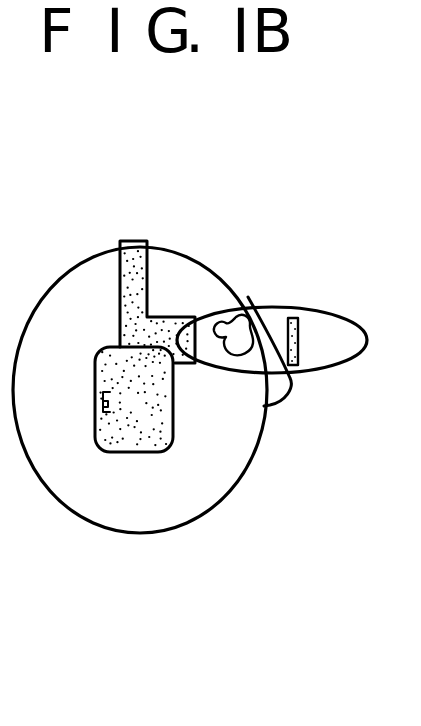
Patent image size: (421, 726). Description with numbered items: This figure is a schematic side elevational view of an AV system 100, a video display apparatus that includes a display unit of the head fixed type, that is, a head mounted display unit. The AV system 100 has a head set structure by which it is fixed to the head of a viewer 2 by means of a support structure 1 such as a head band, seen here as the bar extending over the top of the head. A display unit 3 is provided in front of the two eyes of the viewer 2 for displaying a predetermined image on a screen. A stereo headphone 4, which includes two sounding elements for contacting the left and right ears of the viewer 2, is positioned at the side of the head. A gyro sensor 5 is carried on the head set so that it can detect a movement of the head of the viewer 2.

The AV system 100 is at (248, 286).
The support structure 1 is at (148, 266).
The viewer 2 is at (70, 295).
The display unit 3 is at (300, 336).
The stereo headphone 4 is at (175, 437).
The gyro sensor 5 is at (97, 407).